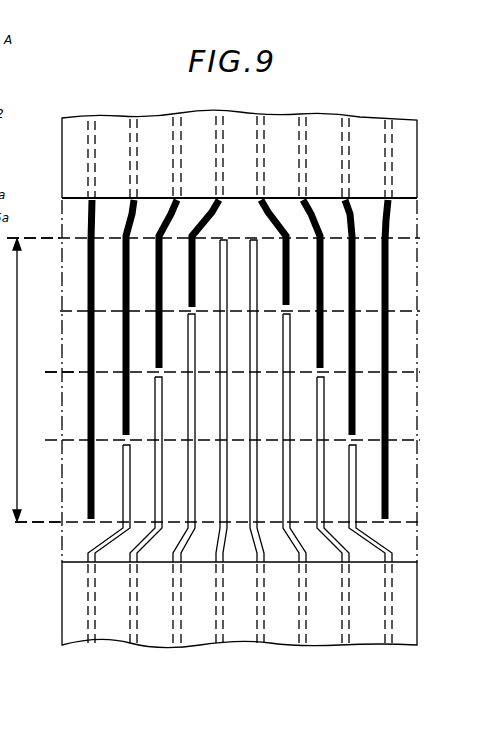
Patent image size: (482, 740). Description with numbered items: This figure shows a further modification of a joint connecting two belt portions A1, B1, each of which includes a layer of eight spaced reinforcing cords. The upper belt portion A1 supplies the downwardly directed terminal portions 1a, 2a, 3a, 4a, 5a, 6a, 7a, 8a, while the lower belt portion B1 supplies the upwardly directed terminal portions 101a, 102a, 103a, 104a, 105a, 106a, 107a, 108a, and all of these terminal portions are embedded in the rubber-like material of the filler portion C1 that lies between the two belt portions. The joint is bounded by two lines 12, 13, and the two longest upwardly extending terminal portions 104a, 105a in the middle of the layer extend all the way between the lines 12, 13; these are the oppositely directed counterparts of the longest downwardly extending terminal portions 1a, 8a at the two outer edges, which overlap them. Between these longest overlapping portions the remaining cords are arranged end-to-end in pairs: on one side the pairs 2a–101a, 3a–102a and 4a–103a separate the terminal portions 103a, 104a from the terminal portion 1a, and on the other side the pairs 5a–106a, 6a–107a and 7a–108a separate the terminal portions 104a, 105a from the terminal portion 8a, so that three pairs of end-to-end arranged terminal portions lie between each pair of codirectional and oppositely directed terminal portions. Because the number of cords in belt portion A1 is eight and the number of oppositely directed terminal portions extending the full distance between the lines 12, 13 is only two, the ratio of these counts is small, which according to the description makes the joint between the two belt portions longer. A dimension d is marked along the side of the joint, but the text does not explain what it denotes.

The terminal portion 1a is at (90, 298).
The terminal portion 2a is at (124, 322).
The terminal portion 3a is at (156, 341).
The terminal portion 4a is at (205, 213).
The terminal portion 5a is at (290, 230).
The terminal portion 6a is at (324, 246).
The terminal portion 7a is at (356, 318).
The terminal portion 8a is at (389, 347).
The terminal portion 101a is at (126, 463).
The terminal portion 102a is at (156, 415).
The terminal portion 103a is at (188, 378).
The terminal portion 104a is at (219, 264).
The terminal portion 105a is at (228, 242).
The terminal portion 106a is at (291, 357).
The terminal portion 107a is at (318, 403).
The terminal portion 108a is at (356, 465).
The line 12 is at (50, 524).
The line 13 is at (43, 241).
The spacing distance d is at (46, 378).
The belt portion A1 is at (432, 131).
The belt portion B1 is at (52, 598).
The filler portion C1 is at (426, 292).